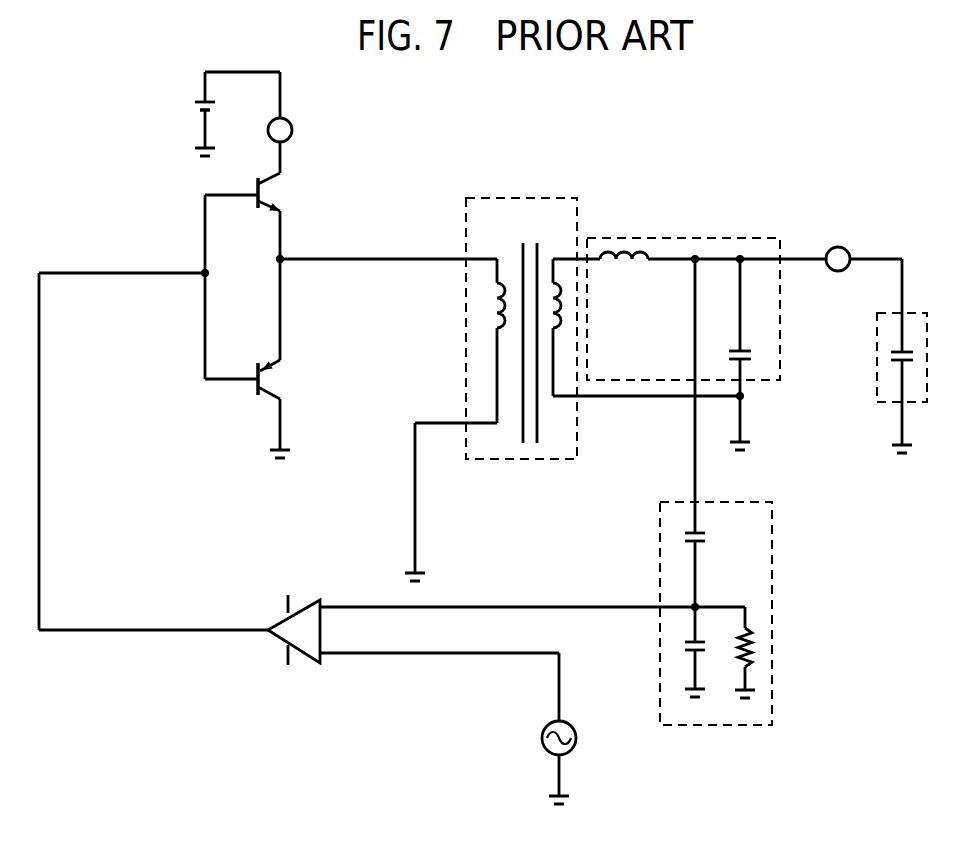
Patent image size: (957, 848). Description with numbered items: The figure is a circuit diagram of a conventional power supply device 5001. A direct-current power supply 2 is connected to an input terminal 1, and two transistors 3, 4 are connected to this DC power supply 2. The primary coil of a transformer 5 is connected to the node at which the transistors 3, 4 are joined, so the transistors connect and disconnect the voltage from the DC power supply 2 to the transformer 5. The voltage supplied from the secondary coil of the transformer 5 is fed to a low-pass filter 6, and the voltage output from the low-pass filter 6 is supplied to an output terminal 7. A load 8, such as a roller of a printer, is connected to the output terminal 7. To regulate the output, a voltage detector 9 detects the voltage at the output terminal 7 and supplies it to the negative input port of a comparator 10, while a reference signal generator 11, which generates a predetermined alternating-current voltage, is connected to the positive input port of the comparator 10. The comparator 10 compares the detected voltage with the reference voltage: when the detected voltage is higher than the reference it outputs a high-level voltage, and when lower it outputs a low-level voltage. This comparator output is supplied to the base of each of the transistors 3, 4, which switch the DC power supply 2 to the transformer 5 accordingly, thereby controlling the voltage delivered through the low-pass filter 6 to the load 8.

The input terminal 1 is at (293, 132).
The direct-current power supply 2 is at (192, 105).
The transistor 3 is at (282, 195).
The transistor 4 is at (278, 385).
The transformer 5 is at (525, 198).
The low-pass filter 6 is at (720, 237).
The output terminal 7 is at (839, 245).
The load 8 is at (917, 313).
The voltage detector 9 is at (772, 557).
The comparator 10 is at (314, 597).
The reference signal generator 11 is at (578, 742).
The conventional power supply device 5001 is at (885, 198).